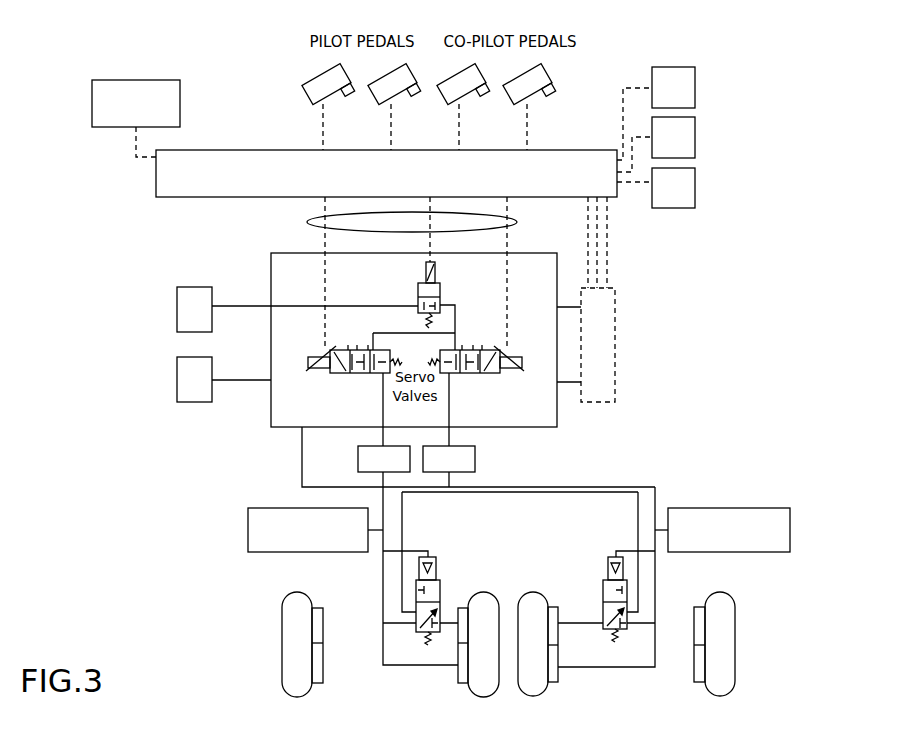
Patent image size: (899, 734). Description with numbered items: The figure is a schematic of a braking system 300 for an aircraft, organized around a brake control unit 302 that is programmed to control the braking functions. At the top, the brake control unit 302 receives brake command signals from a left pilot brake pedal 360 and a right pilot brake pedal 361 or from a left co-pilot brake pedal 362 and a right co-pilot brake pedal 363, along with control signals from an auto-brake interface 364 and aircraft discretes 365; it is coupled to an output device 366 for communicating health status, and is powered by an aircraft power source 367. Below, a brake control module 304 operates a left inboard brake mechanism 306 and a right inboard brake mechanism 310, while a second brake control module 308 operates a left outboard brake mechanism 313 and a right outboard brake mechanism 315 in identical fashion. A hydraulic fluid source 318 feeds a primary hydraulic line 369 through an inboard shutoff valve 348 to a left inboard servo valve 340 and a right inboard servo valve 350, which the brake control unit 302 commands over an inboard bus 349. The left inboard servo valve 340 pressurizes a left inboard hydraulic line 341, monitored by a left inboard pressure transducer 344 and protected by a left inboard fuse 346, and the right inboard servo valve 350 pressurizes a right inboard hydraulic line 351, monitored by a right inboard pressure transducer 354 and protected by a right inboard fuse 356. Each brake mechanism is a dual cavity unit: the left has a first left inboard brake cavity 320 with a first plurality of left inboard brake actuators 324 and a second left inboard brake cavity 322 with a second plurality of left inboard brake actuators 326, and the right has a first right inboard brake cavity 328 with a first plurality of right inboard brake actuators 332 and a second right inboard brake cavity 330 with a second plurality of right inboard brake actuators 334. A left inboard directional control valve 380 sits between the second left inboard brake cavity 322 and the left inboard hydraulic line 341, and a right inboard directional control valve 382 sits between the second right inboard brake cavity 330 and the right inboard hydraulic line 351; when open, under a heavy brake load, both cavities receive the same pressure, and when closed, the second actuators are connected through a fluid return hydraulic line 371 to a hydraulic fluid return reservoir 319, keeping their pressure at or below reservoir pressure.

The braking system 300 is at (52, 103).
The brake control unit 302 is at (386, 173).
The brake control module 304 is at (518, 424).
The left inboard brake mechanism 306 is at (446, 688).
The second brake control module 308 is at (598, 403).
The right inboard brake mechanism 310 is at (566, 688).
The left outboard brake mechanism 313 is at (322, 688).
The right outboard brake mechanism 315 is at (688, 688).
The hydraulic fluid source 318 is at (190, 287).
The hydraulic fluid return reservoir 319 is at (178, 402).
The first left inboard brake cavity 320 is at (458, 672).
The second left inboard brake cavity 322 is at (460, 633).
The first plurality of left inboard brake actuators 324 is at (462, 683).
The second plurality of left inboard brake actuators 326 is at (462, 606).
The first right inboard brake cavity 328 is at (558, 674).
The second right inboard brake cavity 330 is at (553, 635).
The first plurality of right inboard brake actuators 332 is at (552, 684).
The second plurality of right inboard brake actuators 334 is at (552, 606).
The left inboard servo valve 340 is at (362, 375).
The left inboard hydraulic line 341 is at (382, 437).
The left inboard pressure transducer 344 is at (248, 518).
The left inboard fuse 346 is at (358, 458).
The inboard shutoff valve 348 is at (440, 293).
The inboard bus 349 is at (318, 216).
The right inboard servo valve 350 is at (476, 375).
The right inboard hydraulic line 351 is at (449, 437).
The right inboard pressure transducer 354 is at (790, 520).
The right inboard fuse 356 is at (475, 458).
The left pilot brake pedal 360 is at (308, 80).
The right pilot brake pedal 361 is at (375, 96).
The left co-pilot brake pedal 362 is at (442, 96).
The right co-pilot brake pedal 363 is at (550, 78).
The auto-brake interface 364 is at (695, 82).
The aircraft discretes 365 is at (695, 140).
The output device 366 is at (695, 187).
The aircraft power source 367 is at (180, 103).
The primary hydraulic line 369 is at (240, 306).
The fluid return hydraulic line 371 is at (240, 382).
The left inboard directional control valve 380 is at (449, 553).
The right inboard directional control valve 382 is at (594, 553).